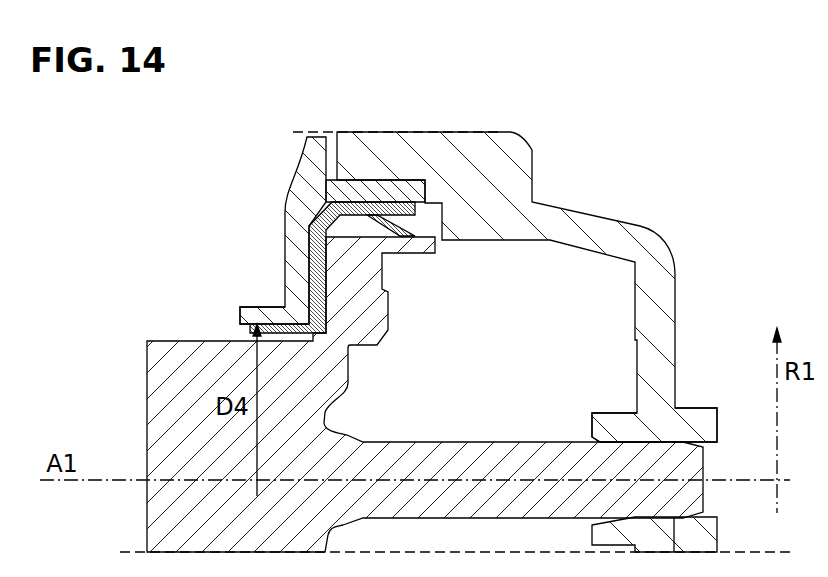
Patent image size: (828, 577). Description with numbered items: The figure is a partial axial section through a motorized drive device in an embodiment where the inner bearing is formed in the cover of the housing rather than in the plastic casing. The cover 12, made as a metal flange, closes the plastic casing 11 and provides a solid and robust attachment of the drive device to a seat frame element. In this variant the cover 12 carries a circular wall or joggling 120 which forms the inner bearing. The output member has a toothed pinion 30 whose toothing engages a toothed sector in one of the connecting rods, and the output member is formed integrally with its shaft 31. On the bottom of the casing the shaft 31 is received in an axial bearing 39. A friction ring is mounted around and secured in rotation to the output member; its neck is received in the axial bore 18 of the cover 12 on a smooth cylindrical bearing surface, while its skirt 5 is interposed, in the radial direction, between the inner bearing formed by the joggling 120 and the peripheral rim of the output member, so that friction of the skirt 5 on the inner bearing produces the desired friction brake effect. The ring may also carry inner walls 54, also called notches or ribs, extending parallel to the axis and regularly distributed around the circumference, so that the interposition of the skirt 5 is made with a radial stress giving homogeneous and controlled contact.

The skirt 5 is at (355, 203).
The plastic casing 11 is at (537, 342).
The cover 12 is at (253, 218).
The axial bore 18 is at (270, 323).
The toothed pinion 30 is at (407, 394).
The shaft 31 is at (493, 442).
The axial bearing 39 is at (678, 438).
The inner walls 54 is at (389, 228).
The circular wall (joggling) 120 is at (395, 192).